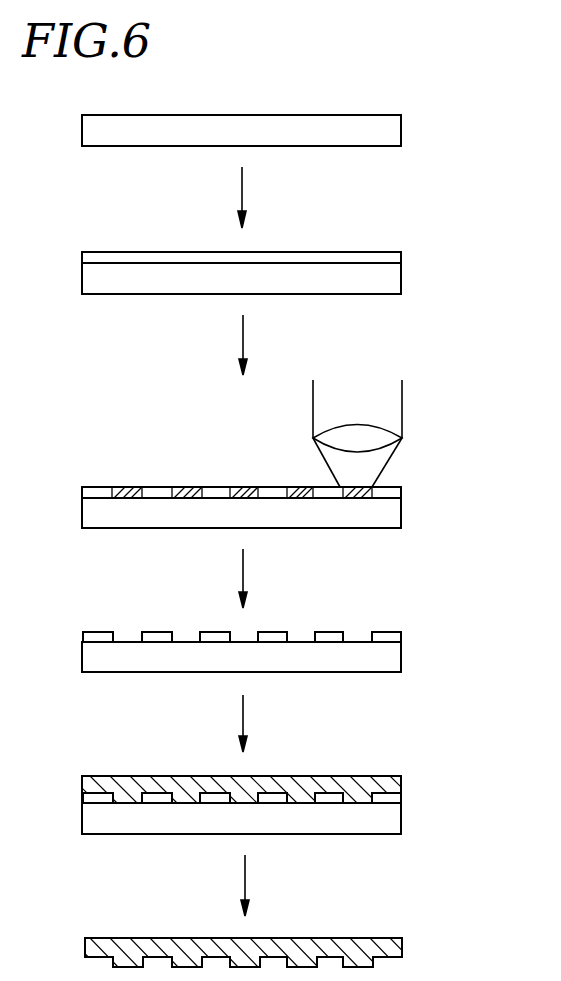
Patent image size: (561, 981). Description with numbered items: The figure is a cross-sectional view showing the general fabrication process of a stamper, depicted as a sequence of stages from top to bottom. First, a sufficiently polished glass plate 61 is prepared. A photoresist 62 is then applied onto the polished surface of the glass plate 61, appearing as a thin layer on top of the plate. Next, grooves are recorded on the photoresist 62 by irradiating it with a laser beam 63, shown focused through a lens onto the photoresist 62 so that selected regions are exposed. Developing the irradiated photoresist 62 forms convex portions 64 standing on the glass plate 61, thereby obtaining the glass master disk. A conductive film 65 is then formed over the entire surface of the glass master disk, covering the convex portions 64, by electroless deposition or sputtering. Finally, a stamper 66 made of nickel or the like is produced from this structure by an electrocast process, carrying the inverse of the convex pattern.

The glass plate 61 is at (395, 130).
The photoresist 62 is at (395, 257).
The laser beam 63 is at (383, 456).
The convex portions 64 is at (333, 637).
The conductive film 65 is at (390, 785).
The stamper 66 is at (393, 948).